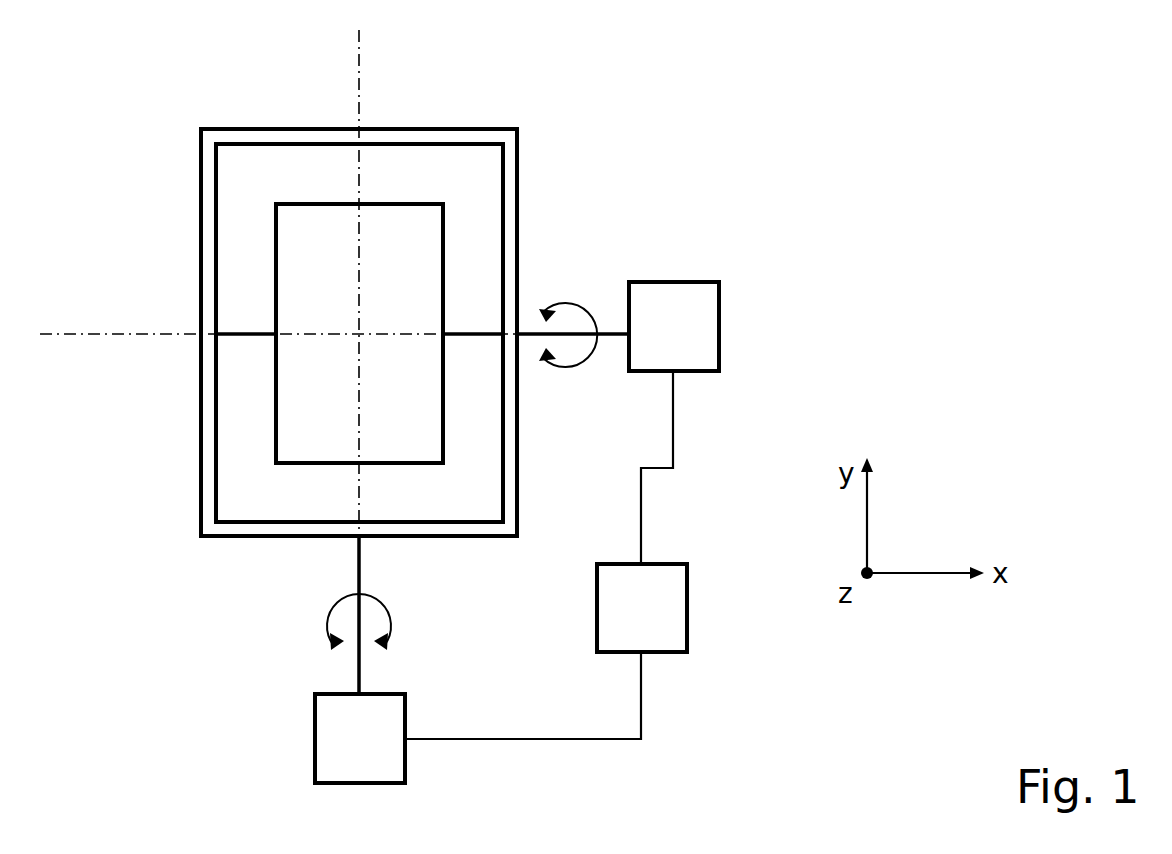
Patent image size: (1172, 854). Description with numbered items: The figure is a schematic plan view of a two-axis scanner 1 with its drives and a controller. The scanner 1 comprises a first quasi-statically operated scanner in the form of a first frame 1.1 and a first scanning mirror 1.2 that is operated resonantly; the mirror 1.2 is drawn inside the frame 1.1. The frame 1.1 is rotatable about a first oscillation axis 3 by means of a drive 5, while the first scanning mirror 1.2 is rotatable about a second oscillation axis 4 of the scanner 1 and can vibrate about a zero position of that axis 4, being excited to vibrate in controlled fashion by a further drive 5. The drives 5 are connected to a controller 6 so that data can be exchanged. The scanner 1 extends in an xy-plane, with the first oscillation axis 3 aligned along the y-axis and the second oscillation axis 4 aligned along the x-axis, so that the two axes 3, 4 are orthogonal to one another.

The scanner 1 is at (176, 111).
The first frame 1.1 is at (206, 190).
The first scanning mirror 1.2 is at (300, 393).
The first oscillation axis 3 is at (356, 97).
The second oscillation axis 4 is at (103, 332).
The drive 5 is at (686, 346).
The controller 6 is at (653, 628).